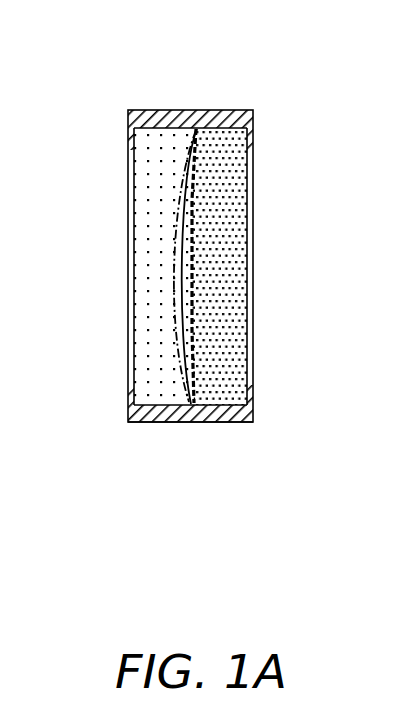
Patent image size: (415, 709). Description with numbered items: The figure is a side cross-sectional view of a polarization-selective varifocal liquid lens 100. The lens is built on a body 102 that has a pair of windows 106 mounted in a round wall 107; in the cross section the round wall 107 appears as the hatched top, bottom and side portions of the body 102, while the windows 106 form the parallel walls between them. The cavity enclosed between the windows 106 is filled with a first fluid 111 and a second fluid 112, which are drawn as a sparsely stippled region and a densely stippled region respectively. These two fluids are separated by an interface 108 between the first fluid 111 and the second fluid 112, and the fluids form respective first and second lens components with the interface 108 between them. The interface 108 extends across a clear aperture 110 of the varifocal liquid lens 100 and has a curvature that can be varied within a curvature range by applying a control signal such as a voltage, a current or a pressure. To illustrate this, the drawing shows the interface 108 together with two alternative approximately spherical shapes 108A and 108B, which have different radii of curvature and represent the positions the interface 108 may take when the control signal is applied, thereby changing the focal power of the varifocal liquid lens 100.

The varifocal liquid lens 100 is at (341, 87).
The body 102 is at (216, 445).
The windows 106 is at (133, 246).
The round wall 107 is at (173, 423).
The interface 108 is at (181, 276).
The approximately spherical shape 108A is at (174, 327).
The approximately spherical shape 108B is at (197, 238).
The clear aperture 110 is at (104, 188).
The first fluid 111 is at (152, 205).
The second fluid 112 is at (218, 190).